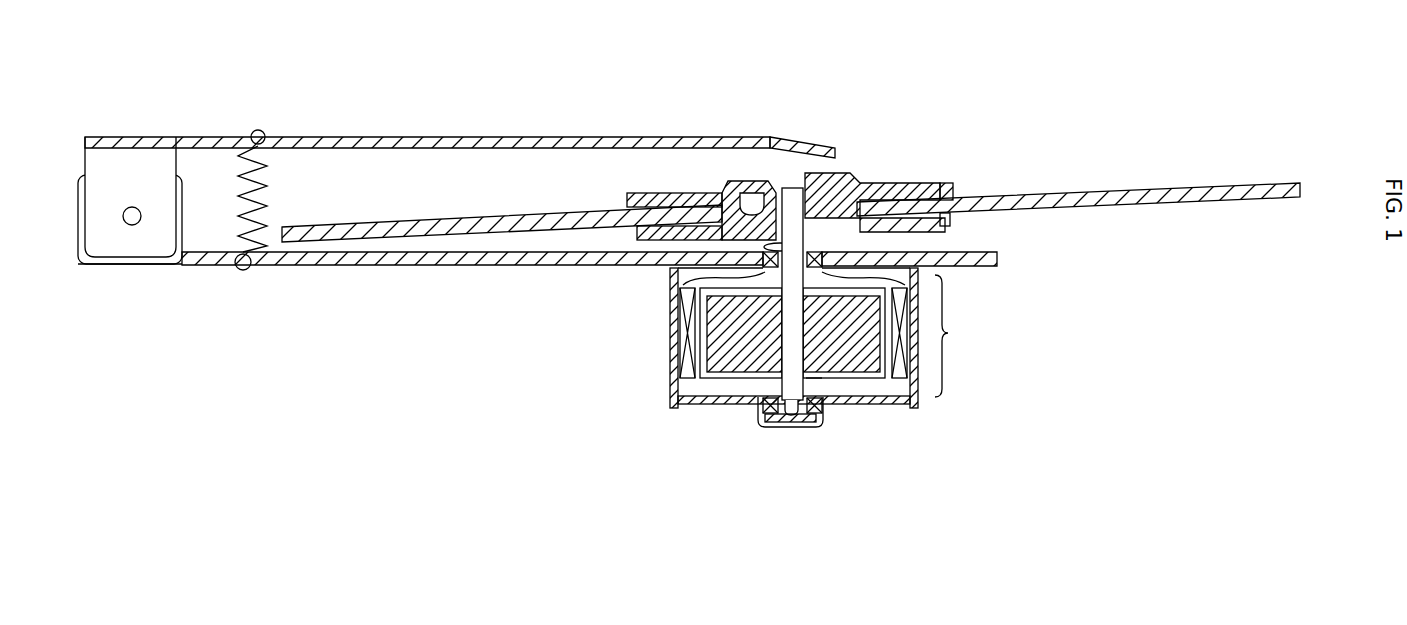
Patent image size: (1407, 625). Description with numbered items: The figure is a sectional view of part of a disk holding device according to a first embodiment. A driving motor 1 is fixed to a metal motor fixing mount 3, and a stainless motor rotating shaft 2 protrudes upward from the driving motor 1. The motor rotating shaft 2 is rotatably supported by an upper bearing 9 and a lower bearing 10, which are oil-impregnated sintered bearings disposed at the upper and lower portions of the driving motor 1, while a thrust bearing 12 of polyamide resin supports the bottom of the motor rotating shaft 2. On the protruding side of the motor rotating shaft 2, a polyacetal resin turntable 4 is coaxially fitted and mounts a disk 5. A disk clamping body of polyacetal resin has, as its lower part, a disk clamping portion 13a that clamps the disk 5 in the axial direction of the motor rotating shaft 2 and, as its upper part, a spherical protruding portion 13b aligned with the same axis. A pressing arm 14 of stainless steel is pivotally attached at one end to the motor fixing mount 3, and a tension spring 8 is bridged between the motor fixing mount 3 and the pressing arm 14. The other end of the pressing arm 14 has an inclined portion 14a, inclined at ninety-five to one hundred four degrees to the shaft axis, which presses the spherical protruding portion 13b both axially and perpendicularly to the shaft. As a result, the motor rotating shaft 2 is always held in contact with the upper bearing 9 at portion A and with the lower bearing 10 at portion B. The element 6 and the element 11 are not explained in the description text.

The driving motor 1 is at (950, 333).
The motor rotating shaft 2 is at (760, 390).
The motor fixing mount 3 is at (573, 265).
The turntable 4 is at (905, 231).
The disk 5 is at (1155, 203).
The pin 6 is at (950, 183).
The tension spring 8 is at (240, 213).
The upper bearing 9 is at (677, 291).
The lower bearing 10 is at (810, 427).
The yoke plate 11 is at (720, 400).
The thrust bearing 12 is at (770, 427).
The disk clamping portion 13a is at (632, 215).
The spherical protruding portion 13b is at (805, 168).
The pressing arm 14 is at (647, 137).
The inclined portion 14a is at (803, 147).
The portion A is at (763, 246).
The portion B is at (813, 385).